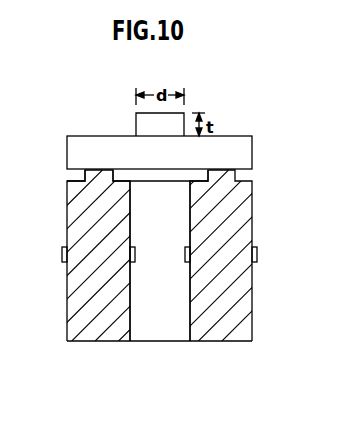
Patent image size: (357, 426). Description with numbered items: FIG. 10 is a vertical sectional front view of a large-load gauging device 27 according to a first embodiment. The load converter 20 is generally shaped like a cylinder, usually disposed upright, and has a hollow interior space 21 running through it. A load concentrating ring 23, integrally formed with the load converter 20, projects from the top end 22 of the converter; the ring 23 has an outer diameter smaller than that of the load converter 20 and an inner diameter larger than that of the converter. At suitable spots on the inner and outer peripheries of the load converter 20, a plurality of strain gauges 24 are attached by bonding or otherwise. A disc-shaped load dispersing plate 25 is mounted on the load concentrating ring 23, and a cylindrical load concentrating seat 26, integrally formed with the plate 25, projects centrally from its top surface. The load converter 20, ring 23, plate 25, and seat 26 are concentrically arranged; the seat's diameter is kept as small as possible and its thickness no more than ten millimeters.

The load converter 20 is at (245, 308).
The hollow interior space 21 is at (146, 314).
The top end 22 is at (74, 178).
The load concentrating ring 23 is at (213, 181).
The strain gauges 24 is at (187, 247).
The load dispersing plate 25 is at (233, 143).
The load concentrating seat 26 is at (136, 126).
The assembly 27 is at (53, 151).